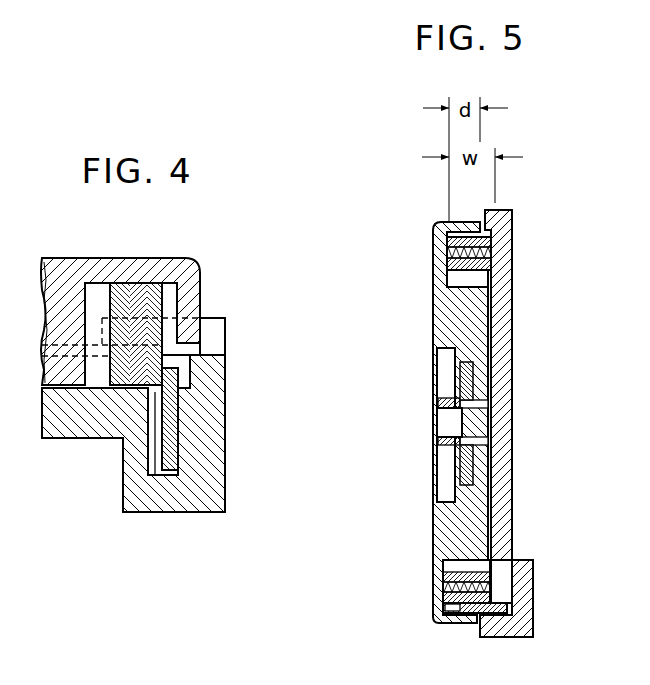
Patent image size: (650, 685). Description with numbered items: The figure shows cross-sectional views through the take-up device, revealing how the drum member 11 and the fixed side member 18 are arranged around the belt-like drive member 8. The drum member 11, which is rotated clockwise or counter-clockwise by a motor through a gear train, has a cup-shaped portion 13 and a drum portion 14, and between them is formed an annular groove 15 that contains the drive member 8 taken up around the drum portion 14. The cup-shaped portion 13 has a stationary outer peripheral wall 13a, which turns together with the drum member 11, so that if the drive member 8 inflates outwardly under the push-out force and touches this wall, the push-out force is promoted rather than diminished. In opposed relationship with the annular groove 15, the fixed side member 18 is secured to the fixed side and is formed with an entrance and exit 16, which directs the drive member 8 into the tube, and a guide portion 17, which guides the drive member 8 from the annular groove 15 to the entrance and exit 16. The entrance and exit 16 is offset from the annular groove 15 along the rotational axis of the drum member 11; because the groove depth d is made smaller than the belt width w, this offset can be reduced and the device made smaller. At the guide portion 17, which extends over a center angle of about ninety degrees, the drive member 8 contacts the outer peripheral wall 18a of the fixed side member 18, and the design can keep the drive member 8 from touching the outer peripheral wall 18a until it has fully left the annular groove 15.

In FIG. 4, the drive member 8 is at (170, 452).
In FIG. 5, the drive member 8 is at (445, 608).
In FIG. 4, the drum member 11 is at (90, 258).
In FIG. 5, the drum member 11 is at (432, 527).
In FIG. 4, the cup-shaped portion 13 is at (143, 282).
In FIG. 5, the cup-shaped portion 13 is at (455, 262).
In FIG. 4, the outer peripheral wall 13a is at (197, 337).
In FIG. 5, the outer peripheral wall 13a is at (462, 222).
In FIG. 4, the drum portion 14 is at (63, 300).
In FIG. 5, the drum portion 14 is at (478, 312).
In FIG. 4, the annular groove 15 is at (177, 284).
In FIG. 5, the annular groove 15 is at (460, 285).
In FIG. 4, the entrance and exit 16 is at (167, 470).
In FIG. 5, the guide portion 17 is at (500, 588).
In FIG. 4, the fixed side member 18 is at (82, 418).
In FIG. 5, the fixed side member 18 is at (497, 547).
In FIG. 4, the outer peripheral wall 18a is at (212, 415).
In FIG. 5, the outer peripheral wall 18a is at (480, 627).